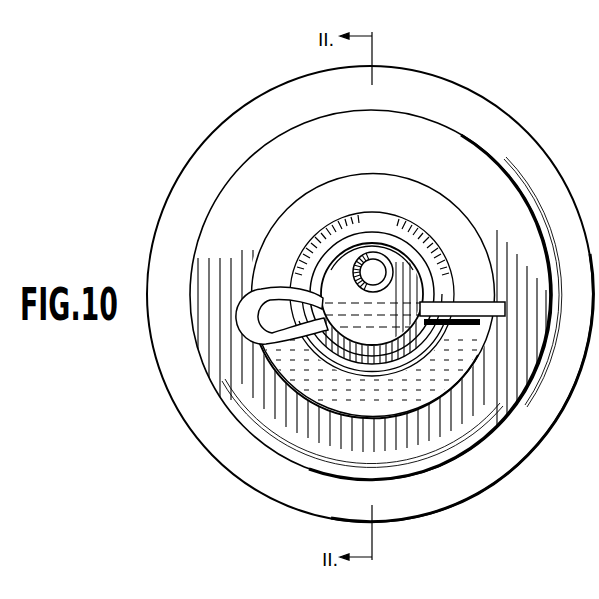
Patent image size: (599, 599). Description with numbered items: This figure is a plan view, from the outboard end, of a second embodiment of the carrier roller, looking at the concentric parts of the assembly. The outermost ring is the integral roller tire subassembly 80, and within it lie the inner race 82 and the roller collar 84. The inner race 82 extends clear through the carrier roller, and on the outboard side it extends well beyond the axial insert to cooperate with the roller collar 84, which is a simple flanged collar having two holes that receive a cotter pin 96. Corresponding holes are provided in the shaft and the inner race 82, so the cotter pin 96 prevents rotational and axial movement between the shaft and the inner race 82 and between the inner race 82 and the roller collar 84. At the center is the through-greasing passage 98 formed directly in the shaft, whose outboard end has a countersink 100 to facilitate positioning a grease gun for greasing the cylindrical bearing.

The integral roller tire subassembly 80 is at (535, 136).
The inner race 82 is at (446, 265).
The roller collar 84 is at (446, 200).
The cotter pin 96 is at (261, 289).
The through-greasing passage 98 is at (359, 284).
The countersink 100 is at (388, 262).